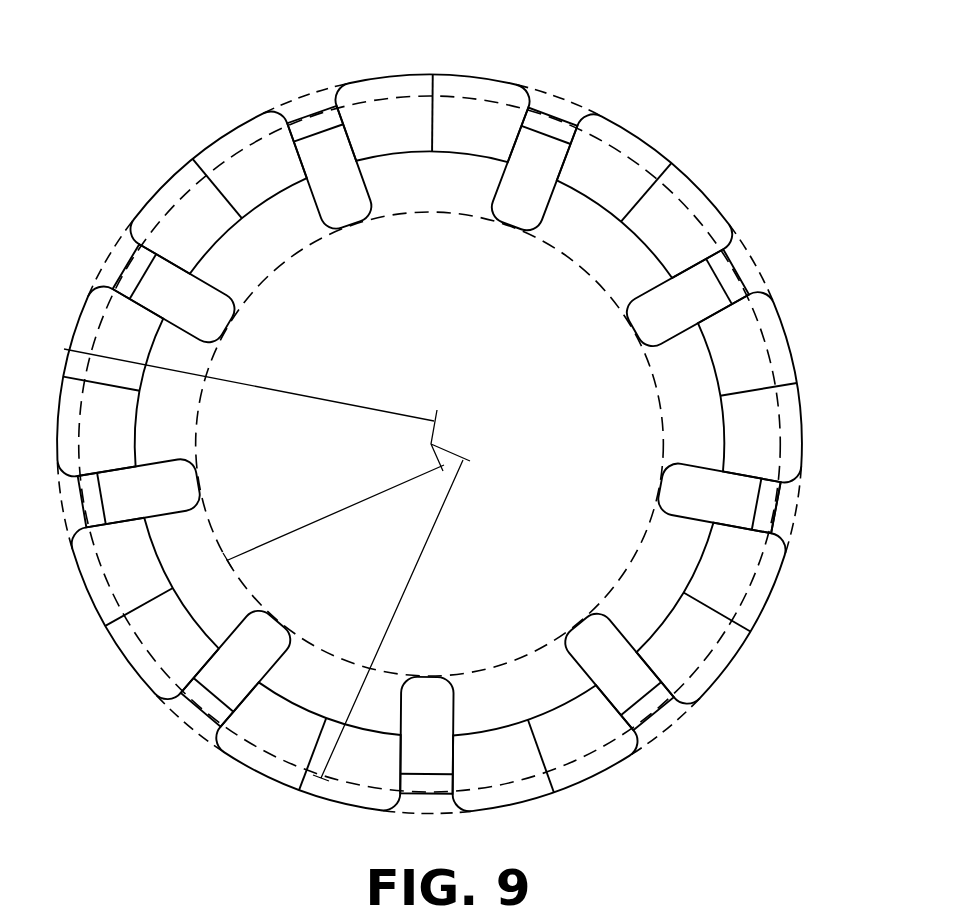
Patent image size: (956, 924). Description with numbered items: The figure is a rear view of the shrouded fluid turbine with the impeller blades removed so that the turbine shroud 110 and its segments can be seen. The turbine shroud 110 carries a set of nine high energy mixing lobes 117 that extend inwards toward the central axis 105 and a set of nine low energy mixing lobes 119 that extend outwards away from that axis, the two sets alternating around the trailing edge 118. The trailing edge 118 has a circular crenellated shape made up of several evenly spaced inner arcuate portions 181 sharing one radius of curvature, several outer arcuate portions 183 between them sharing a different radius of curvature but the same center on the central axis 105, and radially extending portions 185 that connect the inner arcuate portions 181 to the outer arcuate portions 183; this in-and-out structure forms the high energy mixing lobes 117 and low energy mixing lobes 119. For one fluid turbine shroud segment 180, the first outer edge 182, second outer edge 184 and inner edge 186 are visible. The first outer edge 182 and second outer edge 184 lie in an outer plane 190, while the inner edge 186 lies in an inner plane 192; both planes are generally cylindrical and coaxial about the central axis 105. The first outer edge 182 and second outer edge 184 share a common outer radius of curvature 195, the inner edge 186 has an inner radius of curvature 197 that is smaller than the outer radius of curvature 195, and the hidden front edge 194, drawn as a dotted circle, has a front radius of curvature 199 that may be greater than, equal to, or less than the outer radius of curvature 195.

The central axis 105 is at (431, 444).
The turbine shroud 110 is at (178, 95).
The high energy mixing lobes 117 is at (232, 688).
The trailing edge 118 is at (88, 590).
The low energy mixing lobes 119 is at (152, 628).
The fluid turbine shroud segment 180 is at (506, 78).
The inner arcuate portions 181 is at (660, 478).
The first outer edge 182 is at (441, 76).
The outer arcuate portions 183 is at (800, 398).
The second outer edge 184 is at (641, 141).
The radially extending portions 185 is at (748, 492).
The inner edge 186 is at (508, 232).
The outer plane 190 is at (312, 85).
The inner plane 192 is at (499, 660).
The front edge 194 is at (700, 186).
The outer radius of curvature 195 is at (249, 385).
The inner radius of curvature 197 is at (333, 516).
The front radius of curvature 199 is at (388, 620).